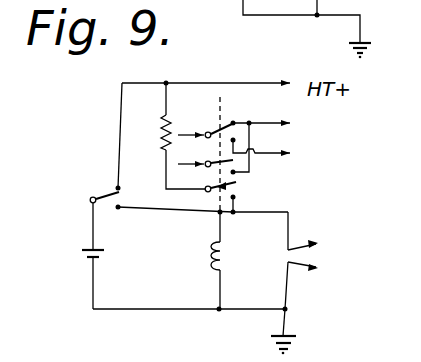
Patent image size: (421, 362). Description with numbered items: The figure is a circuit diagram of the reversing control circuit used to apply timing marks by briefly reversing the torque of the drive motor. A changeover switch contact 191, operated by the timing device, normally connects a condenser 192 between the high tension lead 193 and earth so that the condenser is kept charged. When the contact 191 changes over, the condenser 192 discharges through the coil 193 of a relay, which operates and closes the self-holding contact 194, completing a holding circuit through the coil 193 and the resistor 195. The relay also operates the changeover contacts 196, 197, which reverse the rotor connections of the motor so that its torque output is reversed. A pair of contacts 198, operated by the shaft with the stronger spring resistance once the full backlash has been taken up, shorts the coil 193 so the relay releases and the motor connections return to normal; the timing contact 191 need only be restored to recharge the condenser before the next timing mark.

The changeover switch contact 191 is at (114, 193).
The condenser 192 is at (84, 253).
The coil of relay 193 is at (137, 82).
The self-holding contact 194 is at (224, 189).
The resistor 195 is at (169, 124).
The changeover contact 196 is at (218, 137).
The changeover contact 197 is at (236, 167).
The pair of contacts 198 is at (320, 256).